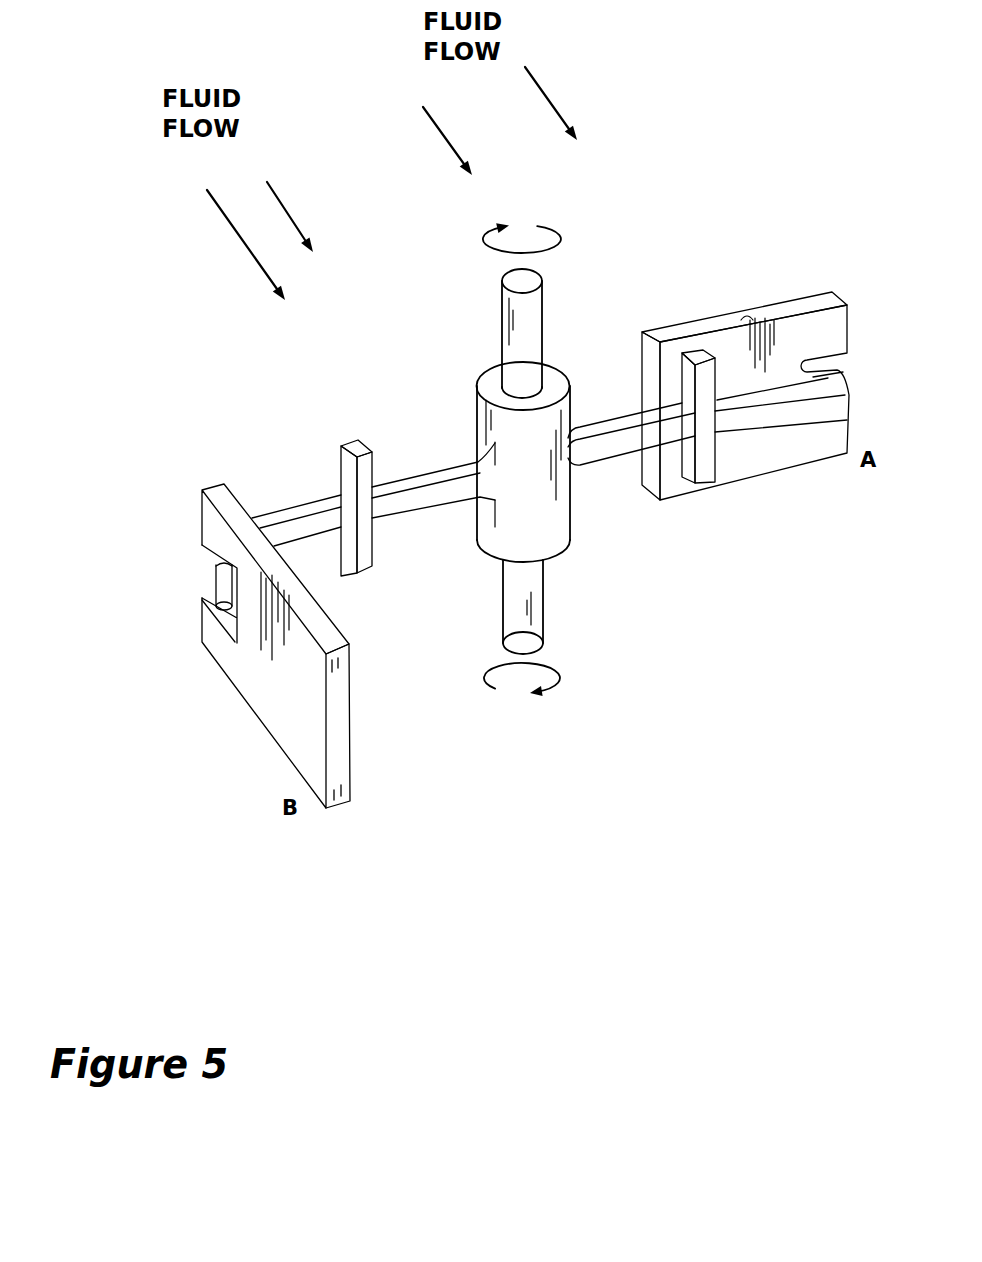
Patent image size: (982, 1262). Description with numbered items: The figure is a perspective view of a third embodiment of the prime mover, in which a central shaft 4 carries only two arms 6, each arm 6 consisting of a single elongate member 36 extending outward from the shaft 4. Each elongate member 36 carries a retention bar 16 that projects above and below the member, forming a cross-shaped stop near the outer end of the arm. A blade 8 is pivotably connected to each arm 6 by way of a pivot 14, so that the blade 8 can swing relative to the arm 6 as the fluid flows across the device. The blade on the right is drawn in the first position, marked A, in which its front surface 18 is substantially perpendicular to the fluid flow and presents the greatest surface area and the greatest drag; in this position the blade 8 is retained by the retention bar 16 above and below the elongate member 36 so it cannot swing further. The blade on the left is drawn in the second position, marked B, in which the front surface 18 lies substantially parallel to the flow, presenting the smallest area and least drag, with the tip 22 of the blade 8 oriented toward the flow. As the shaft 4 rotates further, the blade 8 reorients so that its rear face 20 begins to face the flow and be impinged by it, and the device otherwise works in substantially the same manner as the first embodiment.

The shaft 4 is at (475, 366).
The arm 6 is at (407, 528).
The blade 8 is at (240, 671).
The pivot 14 is at (202, 580).
The retention bar 16 is at (346, 428).
The front surface 18 is at (521, 459).
The rear face 20 is at (776, 345).
The tip 22 is at (346, 826).
The elongate member 36 is at (610, 460).